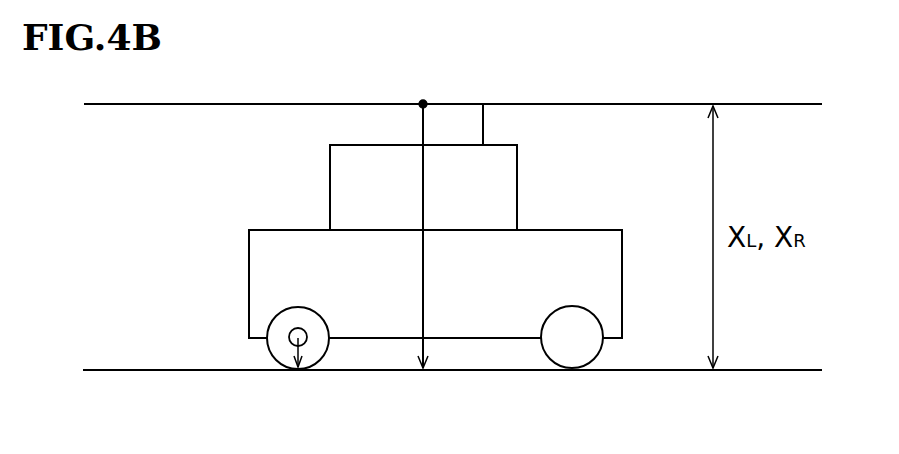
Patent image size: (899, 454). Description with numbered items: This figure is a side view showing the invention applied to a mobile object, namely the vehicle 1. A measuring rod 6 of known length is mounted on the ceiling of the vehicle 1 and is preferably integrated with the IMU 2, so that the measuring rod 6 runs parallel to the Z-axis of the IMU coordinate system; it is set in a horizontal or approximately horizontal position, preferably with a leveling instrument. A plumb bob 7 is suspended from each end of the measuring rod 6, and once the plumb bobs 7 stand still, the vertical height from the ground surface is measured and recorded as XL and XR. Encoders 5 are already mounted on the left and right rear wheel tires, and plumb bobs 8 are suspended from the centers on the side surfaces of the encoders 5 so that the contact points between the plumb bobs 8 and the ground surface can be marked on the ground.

The vehicle 1 is at (578, 230).
The IMU 2 is at (485, 117).
The encoder 5 is at (307, 330).
The measuring rod 6 is at (424, 103).
The plumb bob 7 is at (425, 269).
The plumb bob 8 is at (289, 343).